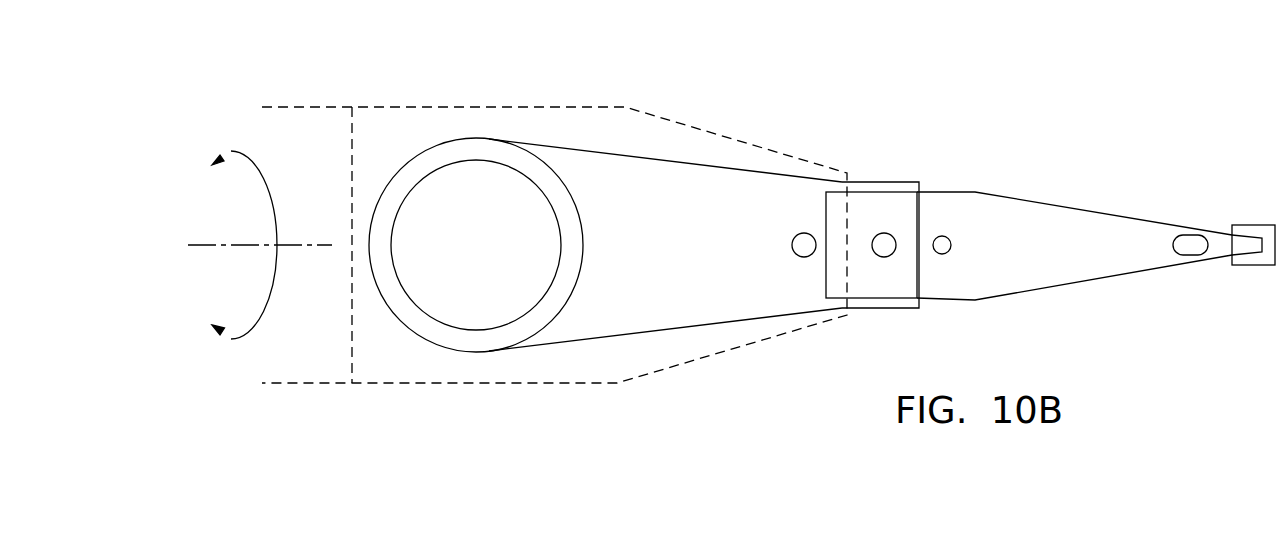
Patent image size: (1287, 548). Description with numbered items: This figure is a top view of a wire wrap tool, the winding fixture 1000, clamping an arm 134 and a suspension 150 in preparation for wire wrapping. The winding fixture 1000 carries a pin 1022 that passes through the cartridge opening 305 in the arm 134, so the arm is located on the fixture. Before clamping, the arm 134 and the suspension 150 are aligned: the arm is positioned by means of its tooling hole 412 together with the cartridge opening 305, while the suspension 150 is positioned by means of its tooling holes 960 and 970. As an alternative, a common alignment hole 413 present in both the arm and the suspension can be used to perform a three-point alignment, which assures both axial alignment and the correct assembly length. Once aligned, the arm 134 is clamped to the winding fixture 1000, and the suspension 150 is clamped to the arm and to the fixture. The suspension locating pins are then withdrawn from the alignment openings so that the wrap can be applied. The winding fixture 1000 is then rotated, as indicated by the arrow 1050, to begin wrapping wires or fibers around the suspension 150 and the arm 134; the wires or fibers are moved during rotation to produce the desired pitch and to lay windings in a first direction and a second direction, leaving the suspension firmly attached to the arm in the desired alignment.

The arrow 1050 is at (257, 162).
The cartridge opening 305 is at (552, 205).
The pin 1022 is at (447, 315).
The arm 134 is at (733, 312).
The winding fixture 1000 is at (872, 133).
The tooling hole 412 is at (797, 237).
The common alignment hole 413 is at (893, 250).
The tooling hole 960 is at (943, 250).
The suspension 150 is at (1032, 277).
The tooling hole 970 is at (1187, 255).